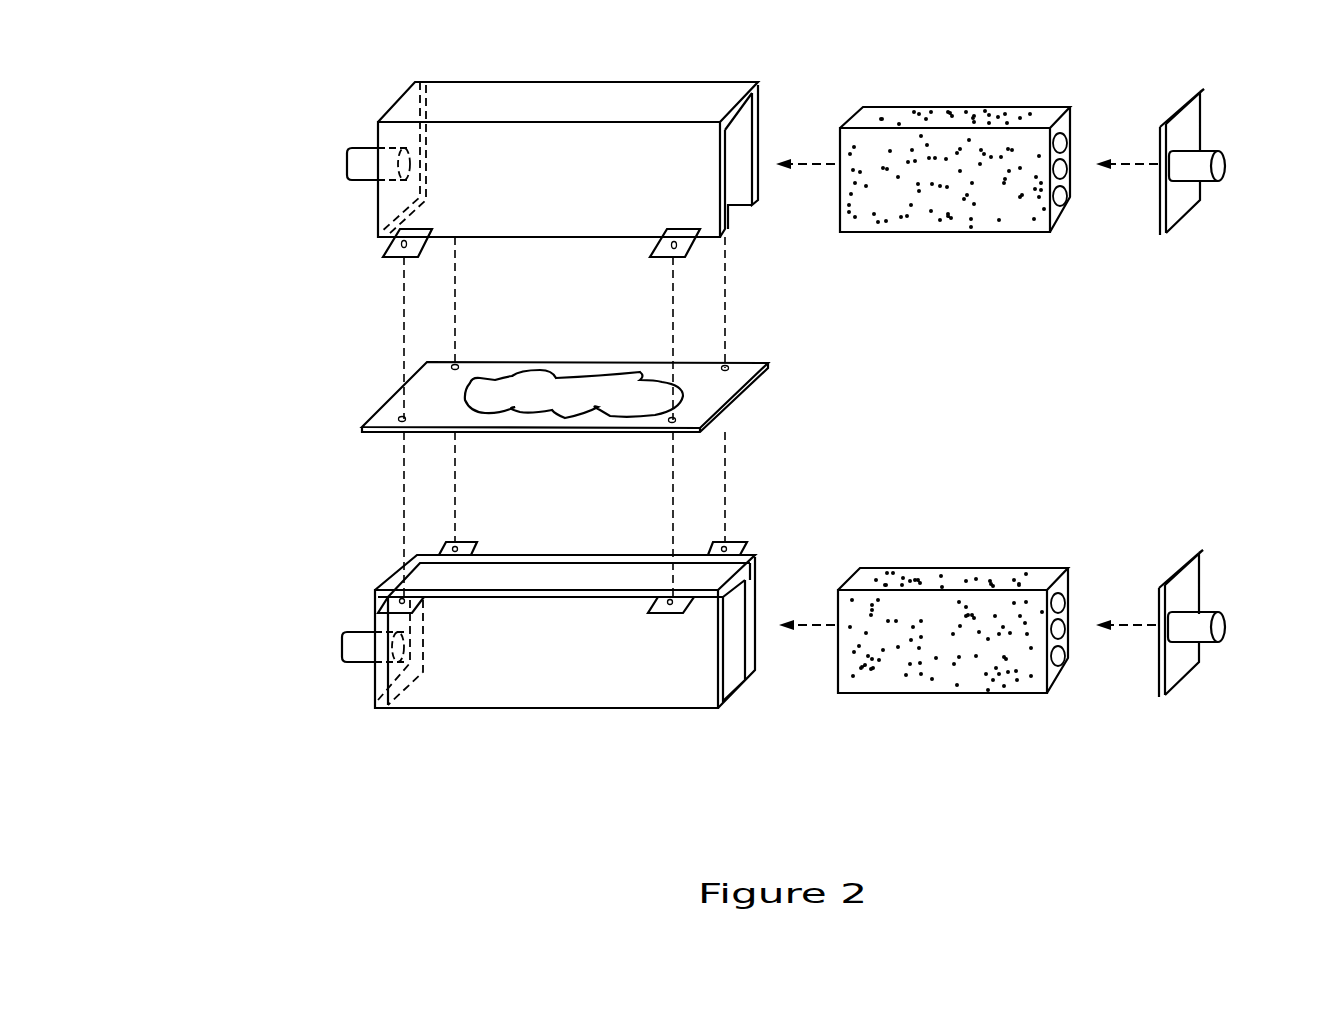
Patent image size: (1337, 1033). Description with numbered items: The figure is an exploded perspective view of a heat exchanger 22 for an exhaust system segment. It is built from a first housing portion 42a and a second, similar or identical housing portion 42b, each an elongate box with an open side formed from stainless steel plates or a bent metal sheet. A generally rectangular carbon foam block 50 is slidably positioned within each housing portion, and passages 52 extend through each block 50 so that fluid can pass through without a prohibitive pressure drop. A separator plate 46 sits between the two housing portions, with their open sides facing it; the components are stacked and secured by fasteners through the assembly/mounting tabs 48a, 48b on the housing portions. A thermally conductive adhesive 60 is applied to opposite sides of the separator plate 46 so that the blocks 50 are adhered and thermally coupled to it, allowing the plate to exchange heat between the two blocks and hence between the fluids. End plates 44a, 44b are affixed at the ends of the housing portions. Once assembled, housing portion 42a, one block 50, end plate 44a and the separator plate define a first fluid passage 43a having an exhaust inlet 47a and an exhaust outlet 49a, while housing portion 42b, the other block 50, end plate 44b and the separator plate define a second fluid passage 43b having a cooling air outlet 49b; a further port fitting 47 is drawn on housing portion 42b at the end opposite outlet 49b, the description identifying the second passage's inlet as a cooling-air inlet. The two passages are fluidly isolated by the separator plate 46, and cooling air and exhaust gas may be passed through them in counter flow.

The heat exchanger 22 is at (268, 135).
The first housing portion 42a is at (598, 97).
The second housing portion 42b is at (617, 682).
The first fluid passage 43a is at (746, 158).
The second fluid passage 43b is at (748, 622).
The end plate 44a is at (1180, 193).
The end plate 44b is at (1180, 655).
The separator plate 46 is at (763, 375).
The outlet fitting 47 is at (343, 648).
The exhaust inlet 47a is at (1226, 166).
The assembly/mounting tabs 48a is at (390, 246).
The assembly/mounting tabs 48b is at (378, 600).
The exhaust outlet 49a is at (347, 160).
The cooling air outlet 49b is at (1226, 627).
The carbon foam block 50 is at (945, 117).
The passages 52 is at (1066, 198).
The thermally conductive adhesive 60 is at (558, 394).